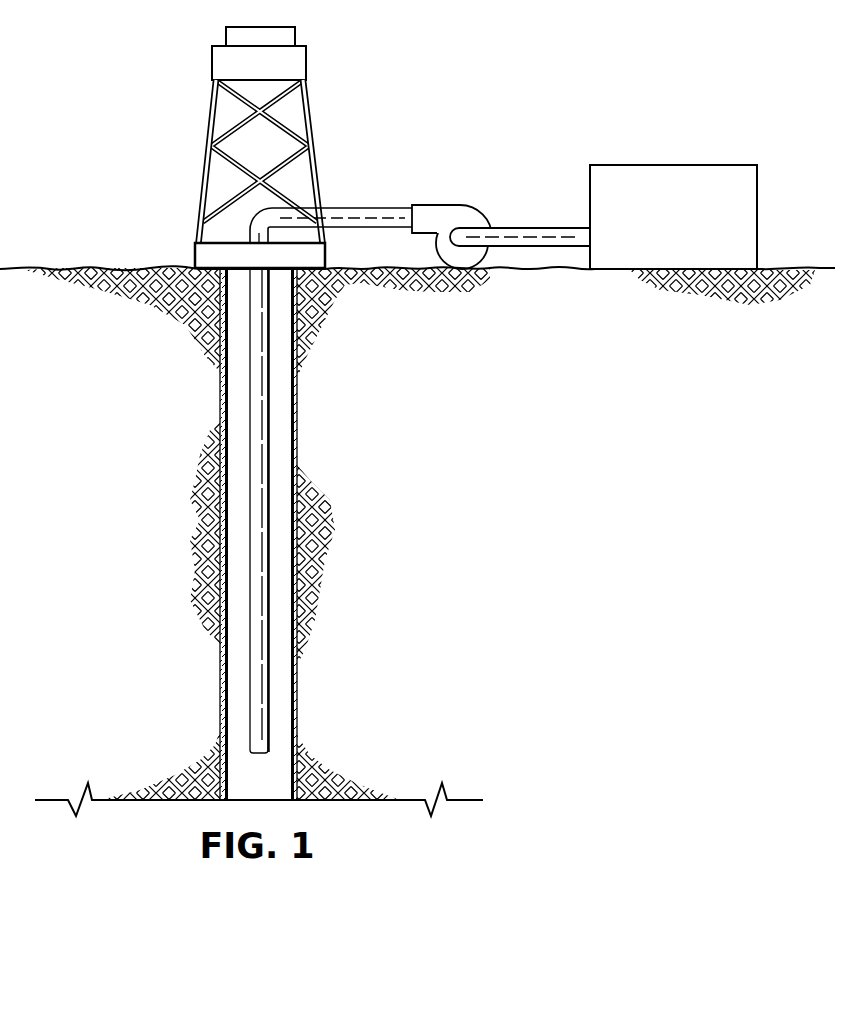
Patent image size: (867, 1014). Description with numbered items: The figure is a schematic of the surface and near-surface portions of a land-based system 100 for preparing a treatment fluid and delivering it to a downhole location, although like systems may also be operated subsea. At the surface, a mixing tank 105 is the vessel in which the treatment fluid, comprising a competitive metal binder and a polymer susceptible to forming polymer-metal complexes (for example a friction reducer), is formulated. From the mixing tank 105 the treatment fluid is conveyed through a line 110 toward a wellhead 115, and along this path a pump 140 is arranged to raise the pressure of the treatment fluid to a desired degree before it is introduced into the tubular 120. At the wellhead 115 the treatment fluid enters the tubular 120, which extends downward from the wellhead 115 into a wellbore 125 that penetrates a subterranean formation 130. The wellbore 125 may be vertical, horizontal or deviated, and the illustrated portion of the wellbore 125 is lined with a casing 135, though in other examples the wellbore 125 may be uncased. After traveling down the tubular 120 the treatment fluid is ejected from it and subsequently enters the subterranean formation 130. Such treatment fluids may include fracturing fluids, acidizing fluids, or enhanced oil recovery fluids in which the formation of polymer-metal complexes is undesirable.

The system 100 is at (146, 60).
The mixing tank 105 is at (673, 165).
The line 110 is at (365, 207).
The wellhead 115 is at (193, 255).
The tubular 120 is at (252, 663).
The wellbore 125 is at (300, 397).
The subterranean formation 130 is at (161, 527).
The casing 135 is at (297, 453).
The pump 140 is at (437, 205).